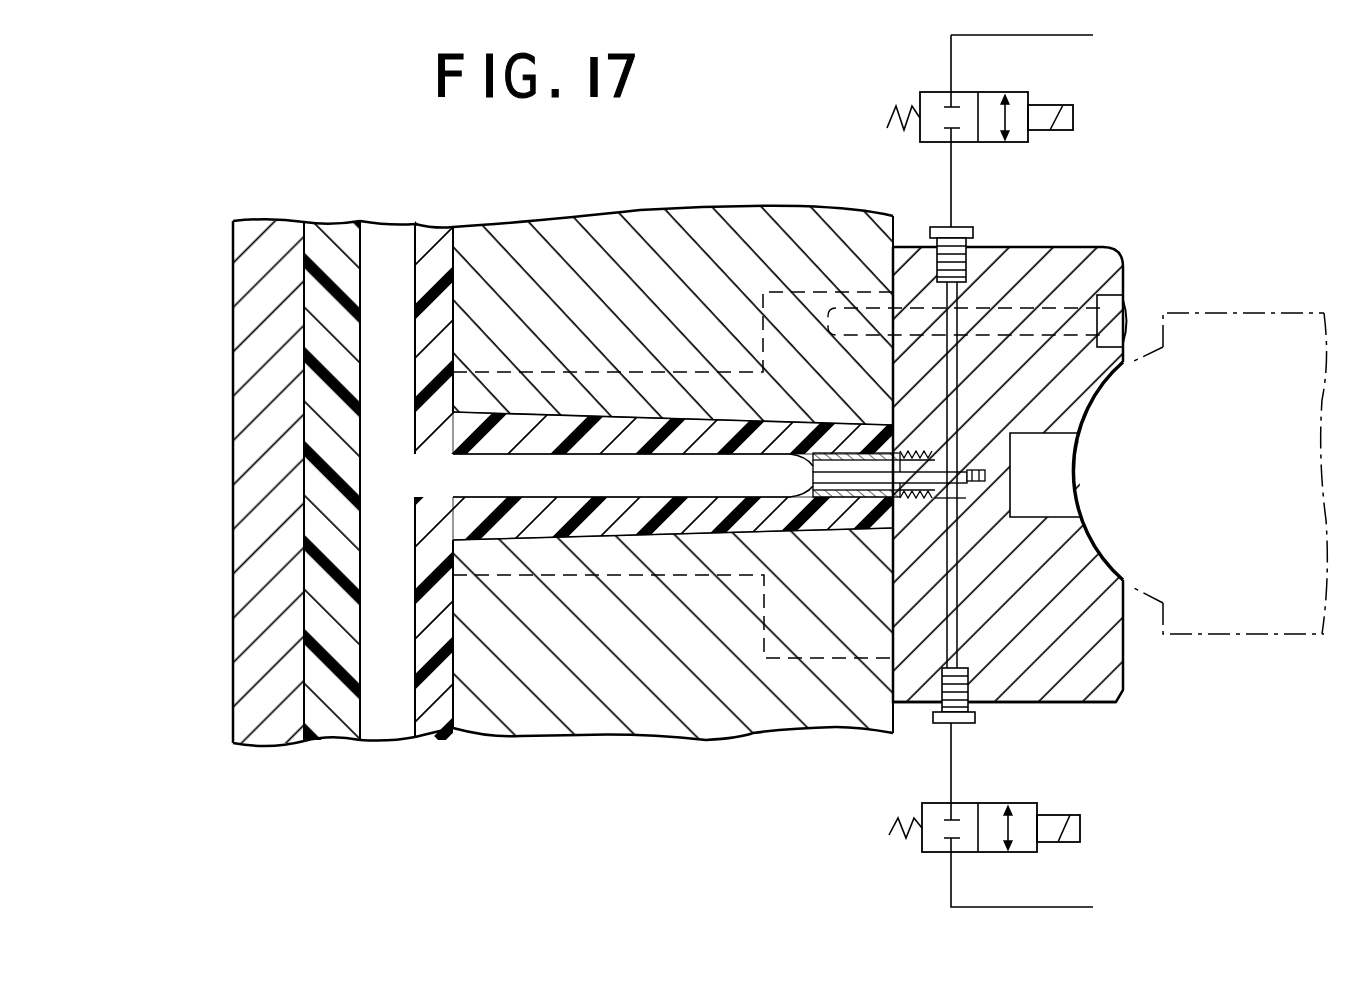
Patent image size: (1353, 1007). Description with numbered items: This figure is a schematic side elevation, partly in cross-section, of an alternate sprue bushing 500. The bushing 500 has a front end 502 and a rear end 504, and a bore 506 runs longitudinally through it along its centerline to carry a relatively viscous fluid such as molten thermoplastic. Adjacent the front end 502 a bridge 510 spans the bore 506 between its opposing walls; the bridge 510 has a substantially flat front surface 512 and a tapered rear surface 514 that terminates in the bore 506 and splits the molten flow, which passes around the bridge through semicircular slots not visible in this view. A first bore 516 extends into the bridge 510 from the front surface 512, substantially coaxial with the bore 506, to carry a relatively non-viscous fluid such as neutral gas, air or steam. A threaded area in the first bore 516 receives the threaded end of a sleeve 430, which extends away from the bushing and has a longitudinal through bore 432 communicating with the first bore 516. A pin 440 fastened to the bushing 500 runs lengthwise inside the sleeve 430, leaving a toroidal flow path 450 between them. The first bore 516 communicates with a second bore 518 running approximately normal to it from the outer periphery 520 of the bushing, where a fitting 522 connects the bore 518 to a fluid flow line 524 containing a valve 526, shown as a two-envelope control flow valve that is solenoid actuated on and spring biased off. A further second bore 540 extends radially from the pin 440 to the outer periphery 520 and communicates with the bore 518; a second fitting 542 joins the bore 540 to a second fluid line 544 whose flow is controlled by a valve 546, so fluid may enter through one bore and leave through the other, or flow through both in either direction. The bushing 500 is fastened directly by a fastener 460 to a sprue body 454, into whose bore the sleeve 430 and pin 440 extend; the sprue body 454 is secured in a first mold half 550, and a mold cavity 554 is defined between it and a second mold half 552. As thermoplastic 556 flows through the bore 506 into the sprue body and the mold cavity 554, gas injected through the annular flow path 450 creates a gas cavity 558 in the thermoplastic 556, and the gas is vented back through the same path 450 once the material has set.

The sleeve 430 is at (842, 453).
The through bore 432 is at (746, 520).
The pin 440 is at (811, 472).
The toroidal flow path 450 is at (792, 428).
The sprue body 454 is at (733, 197).
The fastener 460 is at (1120, 295).
The sprue bushing 500 is at (1063, 247).
The front end 502 is at (862, 712).
The rear end 504 is at (1127, 668).
The bore 506 is at (1062, 432).
The bridge 510 is at (965, 503).
The front surface 512 is at (775, 525).
The rear surface 514 is at (1073, 470).
The first bore 516 is at (960, 440).
The second bore 518 is at (957, 600).
The outer periphery 520 is at (1085, 702).
The fitting 522 is at (968, 722).
The fluid flow line 524 is at (951, 765).
The valve 526 is at (1025, 852).
The second bore 540 is at (957, 365).
The second fitting 542 is at (963, 225).
The second fluid line 544 is at (951, 182).
The valve 546 is at (1028, 92).
The first mold half 550 is at (625, 712).
The second mold half 552 is at (258, 740).
The mold cavity 554 is at (315, 615).
The thermoplastic 556 is at (330, 233).
The gas cavity 558 is at (380, 238).